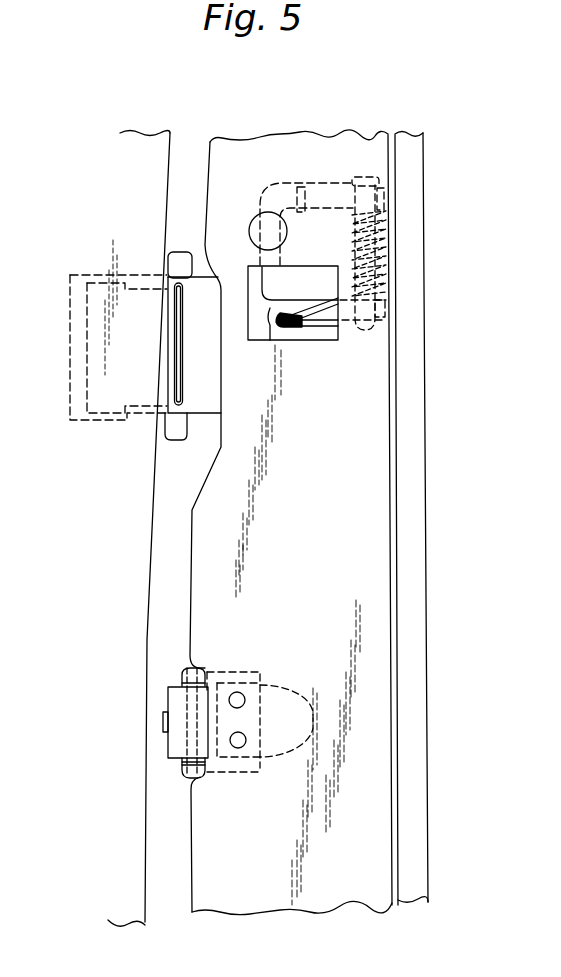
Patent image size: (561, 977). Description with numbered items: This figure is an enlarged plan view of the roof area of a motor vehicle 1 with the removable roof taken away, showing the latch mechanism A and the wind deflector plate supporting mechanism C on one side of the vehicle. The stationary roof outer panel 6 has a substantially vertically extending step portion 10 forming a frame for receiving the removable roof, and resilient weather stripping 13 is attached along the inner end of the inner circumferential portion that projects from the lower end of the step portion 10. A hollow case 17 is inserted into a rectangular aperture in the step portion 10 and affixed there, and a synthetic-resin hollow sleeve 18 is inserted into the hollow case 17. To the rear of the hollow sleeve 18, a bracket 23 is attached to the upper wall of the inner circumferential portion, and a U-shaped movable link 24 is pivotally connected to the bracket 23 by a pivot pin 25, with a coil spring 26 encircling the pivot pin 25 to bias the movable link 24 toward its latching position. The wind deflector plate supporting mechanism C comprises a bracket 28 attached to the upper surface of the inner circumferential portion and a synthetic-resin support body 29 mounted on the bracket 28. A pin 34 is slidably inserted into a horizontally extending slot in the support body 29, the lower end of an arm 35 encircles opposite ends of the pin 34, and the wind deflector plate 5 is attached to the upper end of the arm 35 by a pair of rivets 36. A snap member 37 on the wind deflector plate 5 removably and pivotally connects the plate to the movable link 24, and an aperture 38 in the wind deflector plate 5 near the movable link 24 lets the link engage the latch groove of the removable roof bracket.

The vehicle body 1 is at (132, 146).
The wind deflector plate 5 is at (357, 893).
The stationary roof outer panel 6 is at (162, 133).
The step portion 10 is at (168, 188).
The weather stripping 13 is at (420, 872).
The hollow case 17 is at (80, 425).
The hollow sleeve 18 is at (137, 425).
The bracket 23 is at (315, 182).
The movable link 24 is at (270, 340).
The pivot pin 25 is at (393, 228).
The coil spring 26 is at (393, 268).
The bracket 28 is at (168, 702).
The support body 29 is at (182, 762).
The pin 34 is at (192, 725).
The arm 35 is at (203, 664).
The rivets 36 is at (245, 700).
The snap member 37 is at (250, 215).
The aperture 38 is at (300, 276).
The latch mechanism A is at (152, 248).
The wind deflector plate supporting mechanism C is at (155, 660).